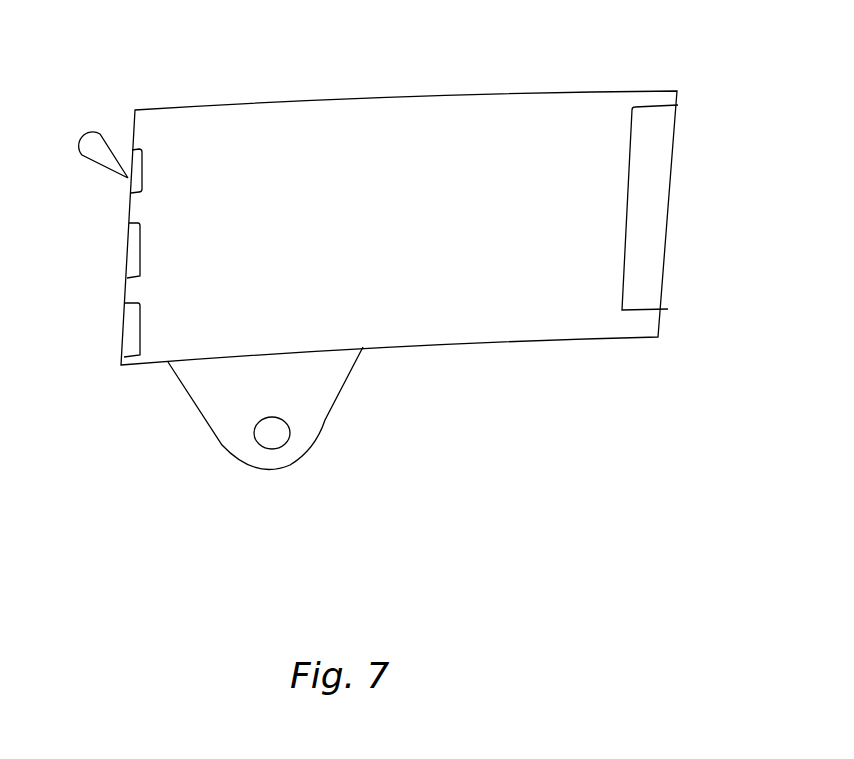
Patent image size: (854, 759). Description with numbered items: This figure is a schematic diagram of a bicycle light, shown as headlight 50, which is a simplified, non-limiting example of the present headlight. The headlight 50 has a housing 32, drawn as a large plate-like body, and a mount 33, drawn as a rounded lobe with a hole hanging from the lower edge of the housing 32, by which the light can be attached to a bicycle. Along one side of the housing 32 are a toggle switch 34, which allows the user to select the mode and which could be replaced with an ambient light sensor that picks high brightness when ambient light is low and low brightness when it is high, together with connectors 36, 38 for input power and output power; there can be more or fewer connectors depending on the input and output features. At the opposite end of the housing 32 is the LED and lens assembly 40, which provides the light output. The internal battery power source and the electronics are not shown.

The housing 32 is at (462, 93).
The mount 33 is at (326, 402).
The toggle switch 34 is at (133, 152).
The connector 36 is at (135, 235).
The connector 38 is at (133, 327).
The LED and lens assembly 40 is at (665, 167).
The headlight 50 is at (113, 417).